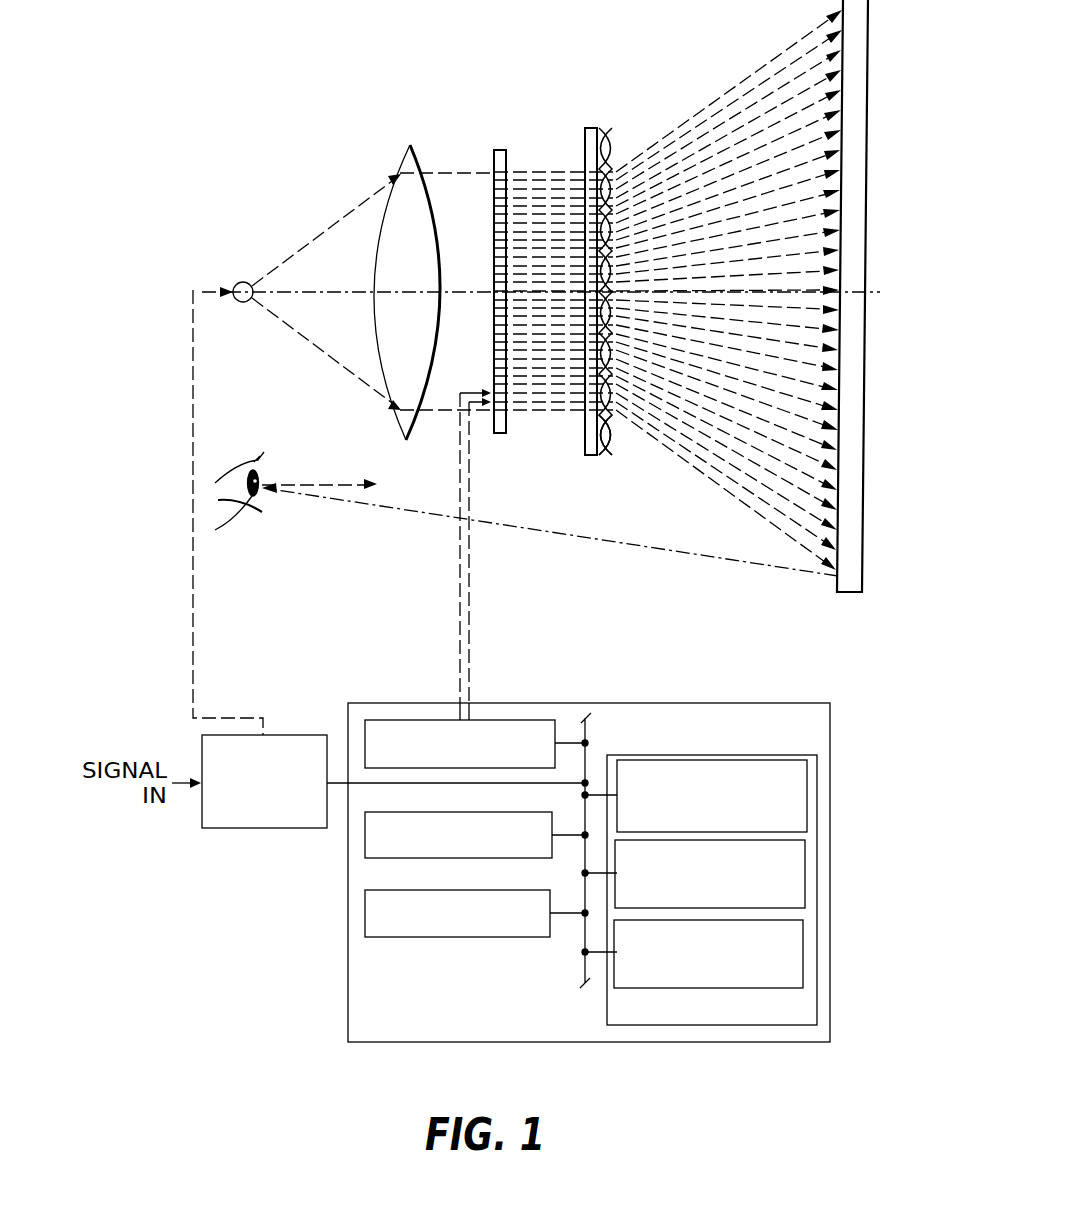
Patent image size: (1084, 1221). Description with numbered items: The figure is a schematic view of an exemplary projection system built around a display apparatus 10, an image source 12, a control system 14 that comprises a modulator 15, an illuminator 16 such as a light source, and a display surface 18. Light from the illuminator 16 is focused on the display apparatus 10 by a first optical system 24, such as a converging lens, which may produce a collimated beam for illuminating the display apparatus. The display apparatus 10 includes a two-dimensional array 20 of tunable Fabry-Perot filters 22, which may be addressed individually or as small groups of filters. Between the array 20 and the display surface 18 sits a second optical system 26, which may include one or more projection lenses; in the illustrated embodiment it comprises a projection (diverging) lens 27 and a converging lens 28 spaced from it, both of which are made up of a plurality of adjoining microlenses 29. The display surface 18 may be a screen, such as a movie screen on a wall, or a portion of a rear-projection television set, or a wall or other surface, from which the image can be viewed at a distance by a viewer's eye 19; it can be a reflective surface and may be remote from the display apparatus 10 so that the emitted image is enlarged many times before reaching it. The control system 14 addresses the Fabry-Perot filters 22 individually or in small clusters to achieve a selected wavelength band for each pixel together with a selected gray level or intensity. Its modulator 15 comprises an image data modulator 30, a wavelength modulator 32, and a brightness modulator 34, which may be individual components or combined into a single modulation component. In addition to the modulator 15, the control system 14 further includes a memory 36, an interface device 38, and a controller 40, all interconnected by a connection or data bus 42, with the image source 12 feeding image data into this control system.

The display apparatus 10 is at (298, 71).
The image source 12 is at (265, 830).
The control system 14 is at (373, 703).
The modulator 15 is at (744, 921).
The illuminator 16 is at (238, 283).
The display surface 18 is at (860, 435).
The viewer's eye 19 is at (234, 506).
The two-dimensional array 20 is at (500, 150).
The tunable Fabry-Perot filter 22 is at (493, 210).
The first optical system 24 is at (398, 170).
The second optical system 26 is at (619, 268).
The projection lens 27 is at (593, 128).
The converging lens 28 is at (617, 141).
The microlens 29 is at (611, 442).
The image data modulator 30 is at (807, 793).
The wavelength modulator 32 is at (805, 873).
The brightness modulator 34 is at (803, 955).
The memory 36 is at (390, 858).
The interface device 38 is at (502, 719).
The controller 40 is at (457, 940).
The data bus 42 is at (357, 780).